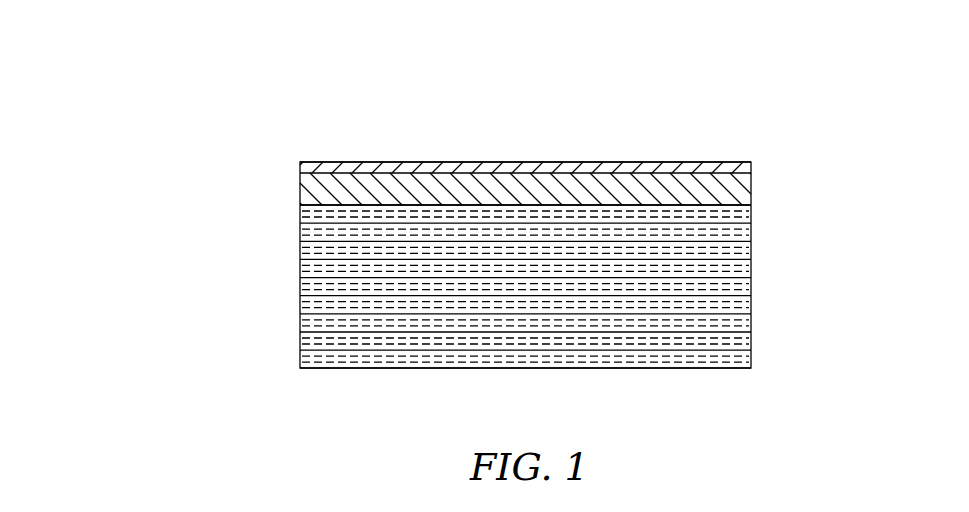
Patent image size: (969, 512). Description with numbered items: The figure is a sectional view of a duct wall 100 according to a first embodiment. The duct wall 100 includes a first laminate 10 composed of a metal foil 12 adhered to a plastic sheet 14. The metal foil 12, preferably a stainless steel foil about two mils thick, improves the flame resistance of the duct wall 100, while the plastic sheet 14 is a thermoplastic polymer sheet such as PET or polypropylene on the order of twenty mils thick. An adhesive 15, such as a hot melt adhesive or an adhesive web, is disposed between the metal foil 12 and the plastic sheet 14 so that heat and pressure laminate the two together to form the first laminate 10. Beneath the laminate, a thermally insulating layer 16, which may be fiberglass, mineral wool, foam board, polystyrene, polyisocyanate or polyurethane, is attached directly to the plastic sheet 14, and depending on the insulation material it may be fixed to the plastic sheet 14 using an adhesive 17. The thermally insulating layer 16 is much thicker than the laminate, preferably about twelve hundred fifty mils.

The first laminate 10 is at (768, 181).
The metal foil 12 is at (300, 169).
The plastic sheet 14 is at (300, 192).
The adhesive 15 is at (753, 175).
The thermally insulating layer 16 is at (752, 272).
The adhesive 17 is at (752, 205).
The duct wall 100 is at (213, 342).